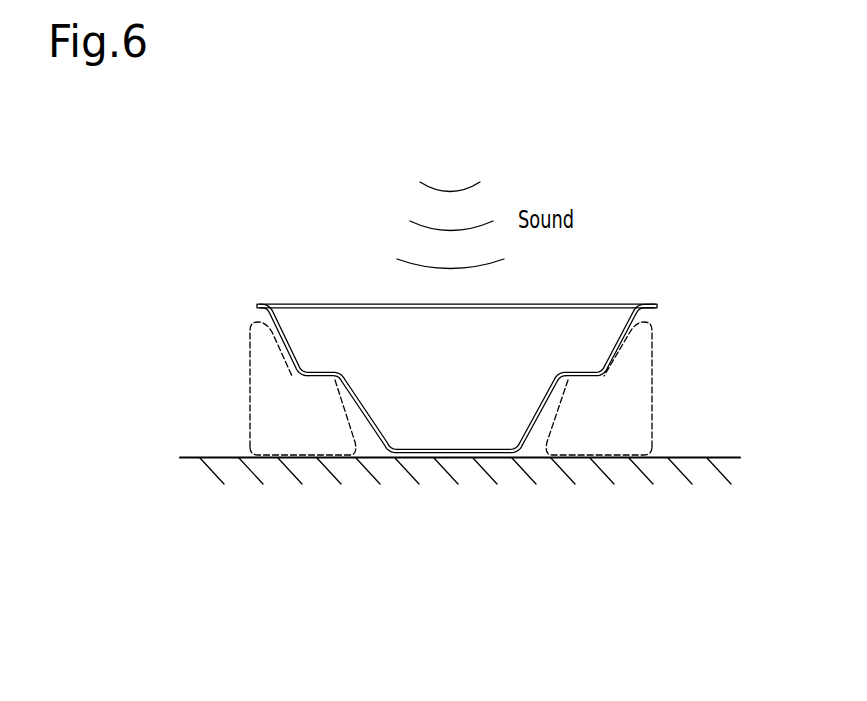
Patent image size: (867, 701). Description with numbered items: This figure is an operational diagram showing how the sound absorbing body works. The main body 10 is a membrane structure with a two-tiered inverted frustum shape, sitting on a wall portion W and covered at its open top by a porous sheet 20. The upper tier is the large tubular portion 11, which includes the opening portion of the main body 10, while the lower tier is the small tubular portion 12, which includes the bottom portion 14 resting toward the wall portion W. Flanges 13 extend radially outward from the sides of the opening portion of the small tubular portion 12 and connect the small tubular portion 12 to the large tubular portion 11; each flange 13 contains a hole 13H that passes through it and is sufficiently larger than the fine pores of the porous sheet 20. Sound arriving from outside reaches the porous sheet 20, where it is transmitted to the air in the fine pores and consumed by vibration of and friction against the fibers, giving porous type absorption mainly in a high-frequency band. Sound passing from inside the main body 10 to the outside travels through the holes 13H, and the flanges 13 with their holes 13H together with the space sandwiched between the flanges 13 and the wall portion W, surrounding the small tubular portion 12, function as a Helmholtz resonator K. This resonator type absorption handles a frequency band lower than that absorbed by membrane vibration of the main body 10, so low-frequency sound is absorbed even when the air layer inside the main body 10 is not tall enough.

The main body 10 is at (418, 378).
The large tubular portion 11 is at (271, 333).
The small tubular portion 12 is at (350, 400).
The flange 13 is at (303, 380).
The hole 13H is at (589, 378).
The bottom portion 14 is at (407, 449).
The porous sheet 20 is at (586, 303).
The Helmholtz resonator K is at (250, 434).
The wall portion W is at (720, 456).